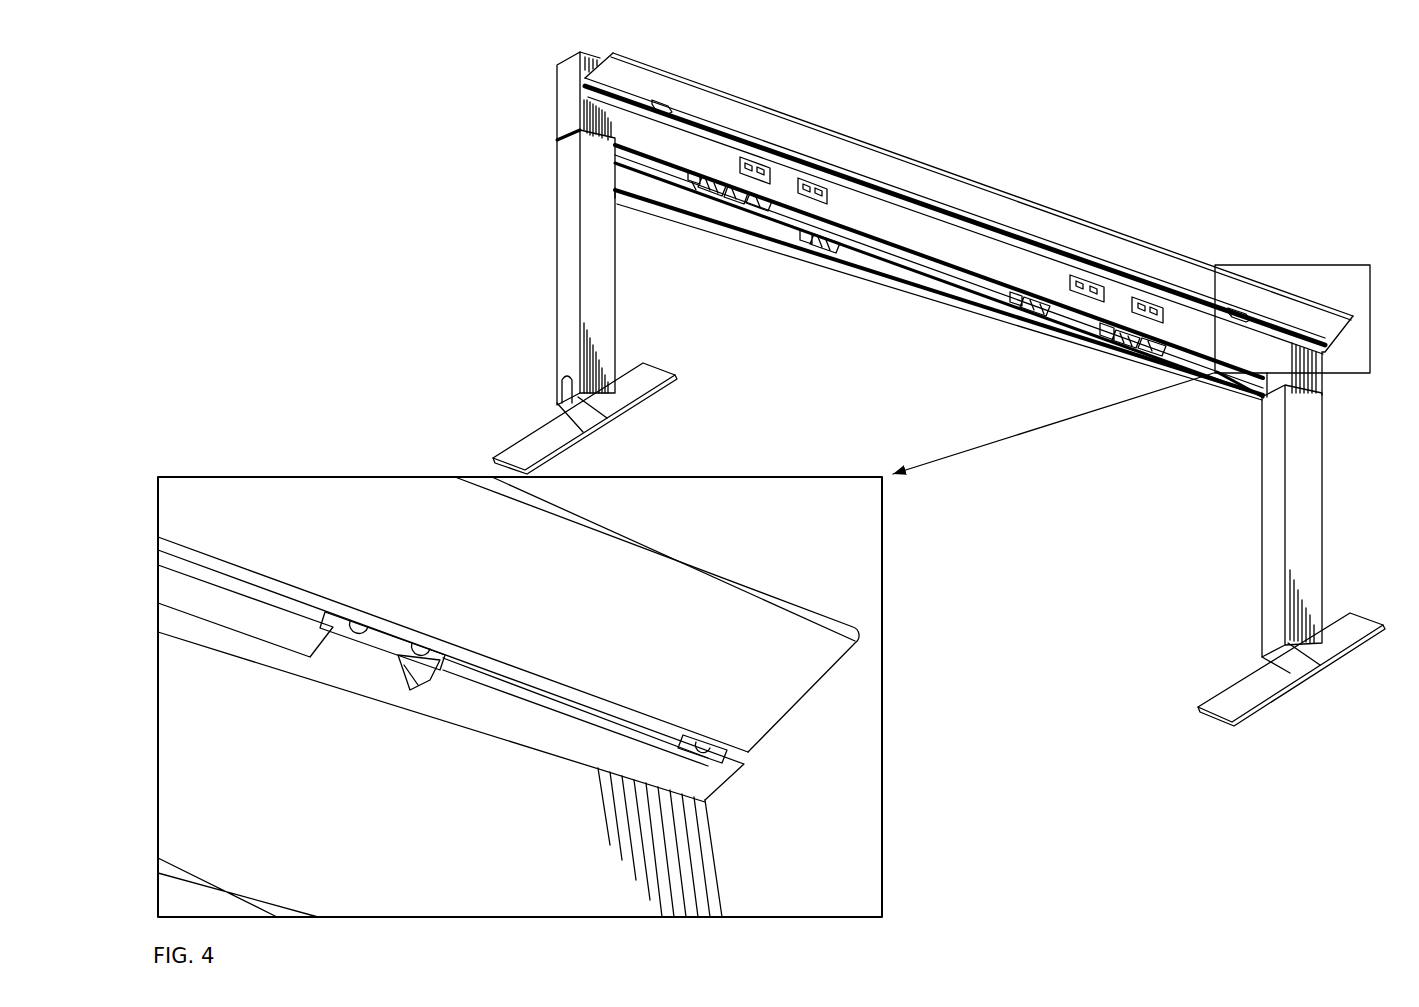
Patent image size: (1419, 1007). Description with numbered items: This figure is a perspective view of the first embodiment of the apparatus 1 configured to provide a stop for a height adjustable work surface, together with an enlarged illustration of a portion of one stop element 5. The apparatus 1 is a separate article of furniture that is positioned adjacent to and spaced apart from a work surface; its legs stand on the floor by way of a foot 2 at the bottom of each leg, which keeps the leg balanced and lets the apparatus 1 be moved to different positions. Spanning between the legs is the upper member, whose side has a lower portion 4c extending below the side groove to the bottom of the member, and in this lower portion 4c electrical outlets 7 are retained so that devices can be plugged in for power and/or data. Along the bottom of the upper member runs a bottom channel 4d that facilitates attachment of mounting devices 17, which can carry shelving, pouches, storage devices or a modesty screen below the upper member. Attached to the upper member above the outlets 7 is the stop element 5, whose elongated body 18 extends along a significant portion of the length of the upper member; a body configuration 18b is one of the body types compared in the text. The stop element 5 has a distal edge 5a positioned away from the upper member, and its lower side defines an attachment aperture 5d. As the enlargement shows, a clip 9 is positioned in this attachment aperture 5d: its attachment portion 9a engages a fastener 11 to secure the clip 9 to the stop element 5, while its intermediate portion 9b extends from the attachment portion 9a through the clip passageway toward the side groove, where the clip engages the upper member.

The apparatus 1 is at (1135, 176).
The foot 2 is at (522, 437).
The lower portion 4c is at (690, 878).
The bottom channel 4d is at (895, 258).
The stop element 5 is at (718, 548).
The distal edge 5a is at (585, 525).
The attachment aperture 5d is at (363, 666).
The electrical outlet 7 is at (820, 186).
The clip 9 is at (393, 681).
The attachment portion 9a is at (390, 619).
The intermediate portion 9b is at (345, 638).
The fastener 11 is at (358, 612).
The mounting device 17 is at (796, 237).
The body 18 is at (930, 158).
The body configuration 18b is at (781, 131).